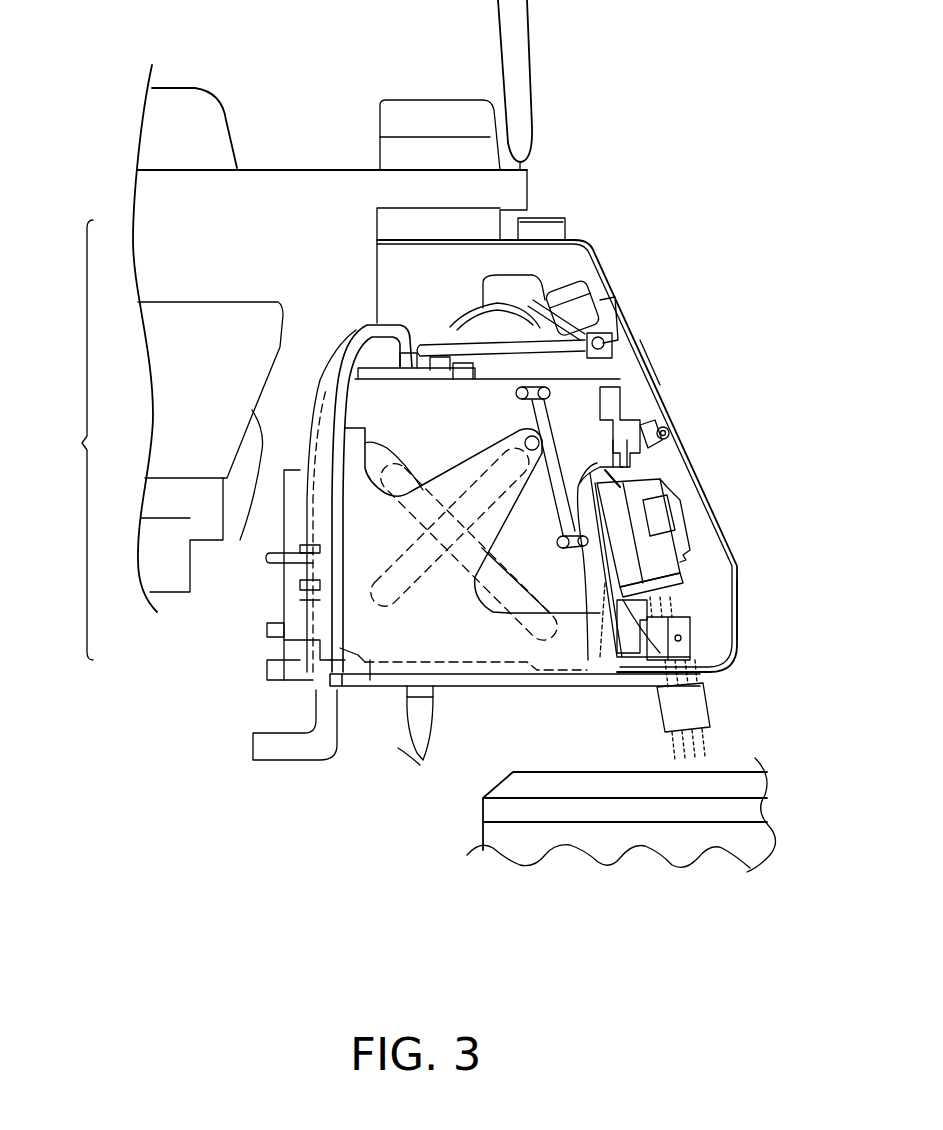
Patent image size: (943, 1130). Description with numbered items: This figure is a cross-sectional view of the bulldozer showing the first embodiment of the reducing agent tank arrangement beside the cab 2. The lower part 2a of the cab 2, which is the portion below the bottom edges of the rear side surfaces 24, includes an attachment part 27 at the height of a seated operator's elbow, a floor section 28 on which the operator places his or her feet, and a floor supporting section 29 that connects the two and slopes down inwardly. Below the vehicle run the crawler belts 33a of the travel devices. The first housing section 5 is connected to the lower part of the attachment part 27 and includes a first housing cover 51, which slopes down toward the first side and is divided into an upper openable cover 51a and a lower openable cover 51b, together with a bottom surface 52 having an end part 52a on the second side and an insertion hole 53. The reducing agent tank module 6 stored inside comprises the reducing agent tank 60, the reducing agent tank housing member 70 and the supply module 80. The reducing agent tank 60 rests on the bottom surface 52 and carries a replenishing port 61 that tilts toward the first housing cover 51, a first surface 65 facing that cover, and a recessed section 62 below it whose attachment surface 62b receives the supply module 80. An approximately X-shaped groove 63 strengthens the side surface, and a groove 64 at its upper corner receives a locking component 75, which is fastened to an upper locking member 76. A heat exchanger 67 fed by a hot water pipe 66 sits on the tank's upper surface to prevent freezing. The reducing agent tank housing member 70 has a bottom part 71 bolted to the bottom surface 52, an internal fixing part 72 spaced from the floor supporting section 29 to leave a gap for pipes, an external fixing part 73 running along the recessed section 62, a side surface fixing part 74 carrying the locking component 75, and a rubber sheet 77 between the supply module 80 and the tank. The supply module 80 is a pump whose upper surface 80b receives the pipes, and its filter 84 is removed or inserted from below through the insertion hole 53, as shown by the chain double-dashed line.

The cab 2 is at (148, 64).
The lower part of the cab 2a is at (66, 440).
The first housing section 5 is at (594, 240).
The reducing agent tank module 6 is at (390, 690).
The rear side surfaces 24 is at (520, 78).
The attachment part 27 is at (183, 237).
The floor section 28 is at (177, 508).
The floor supporting section 29 is at (247, 527).
The crawler belt 33a is at (717, 783).
The first housing cover 51 is at (738, 561).
The upper openable cover 51a is at (647, 360).
The lower openable cover 51b is at (740, 612).
The bottom surface 52 is at (477, 687).
The end part 52a is at (337, 690).
The insertion hole 53 is at (700, 687).
The reducing agent tank 60 is at (620, 330).
The replenishing port 61 is at (587, 293).
The recessed section 62 is at (670, 433).
The attachment surface 62b is at (613, 560).
The groove 63 is at (370, 680).
The groove 64 is at (655, 415).
The first surface 65 is at (603, 570).
The hot water pipe 66 is at (377, 327).
The heat exchanger 67 is at (413, 365).
The reducing agent tank housing member 70 is at (273, 686).
The bottom part 71 is at (528, 667).
The internal fixing part 72 is at (293, 580).
The external fixing part 73 is at (630, 653).
The side surface fixing part 74 is at (420, 765).
The locking component 75 is at (620, 363).
The upper locking member 76 is at (610, 395).
The rubber sheet 77 is at (608, 600).
The supply module 80 is at (640, 510).
The upper surface of the supply module 80b is at (618, 478).
The filter 84 is at (710, 742).